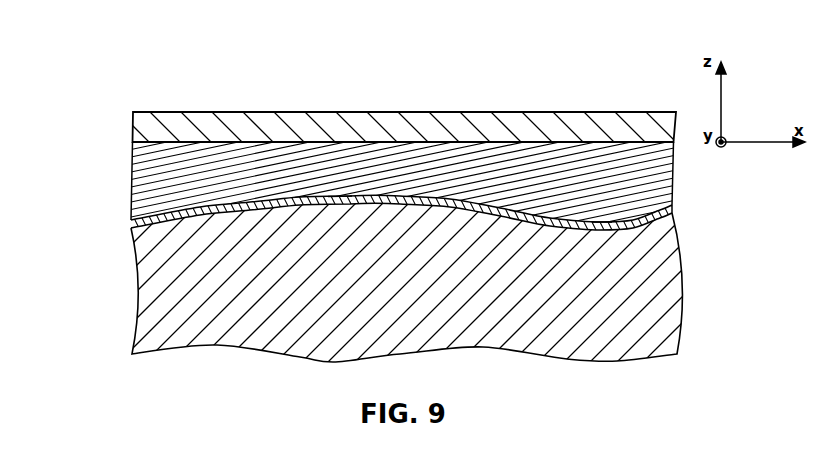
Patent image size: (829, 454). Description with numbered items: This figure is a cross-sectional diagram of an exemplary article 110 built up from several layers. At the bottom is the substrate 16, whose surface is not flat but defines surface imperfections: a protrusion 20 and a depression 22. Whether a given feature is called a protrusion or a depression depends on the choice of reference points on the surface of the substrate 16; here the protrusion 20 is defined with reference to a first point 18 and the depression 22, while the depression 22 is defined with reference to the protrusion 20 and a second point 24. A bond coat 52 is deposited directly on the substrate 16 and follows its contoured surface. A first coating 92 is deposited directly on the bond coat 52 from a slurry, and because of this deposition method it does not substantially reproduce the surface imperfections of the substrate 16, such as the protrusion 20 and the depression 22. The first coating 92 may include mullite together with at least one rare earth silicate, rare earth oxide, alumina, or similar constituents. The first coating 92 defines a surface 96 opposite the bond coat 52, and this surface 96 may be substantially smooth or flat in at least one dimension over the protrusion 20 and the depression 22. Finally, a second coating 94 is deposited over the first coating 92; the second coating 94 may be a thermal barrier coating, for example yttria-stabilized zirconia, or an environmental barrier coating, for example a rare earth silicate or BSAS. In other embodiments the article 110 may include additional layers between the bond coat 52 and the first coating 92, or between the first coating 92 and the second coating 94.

The article 110 is at (107, 43).
The second coating 94 is at (136, 131).
The surface 96 is at (261, 143).
The first coating 92 is at (134, 175).
The bond coat 52 is at (136, 230).
The first point 18 is at (136, 233).
The protrusion 20 is at (340, 199).
The depression 22 is at (603, 229).
The second point 24 is at (673, 207).
The substrate 16 is at (144, 297).